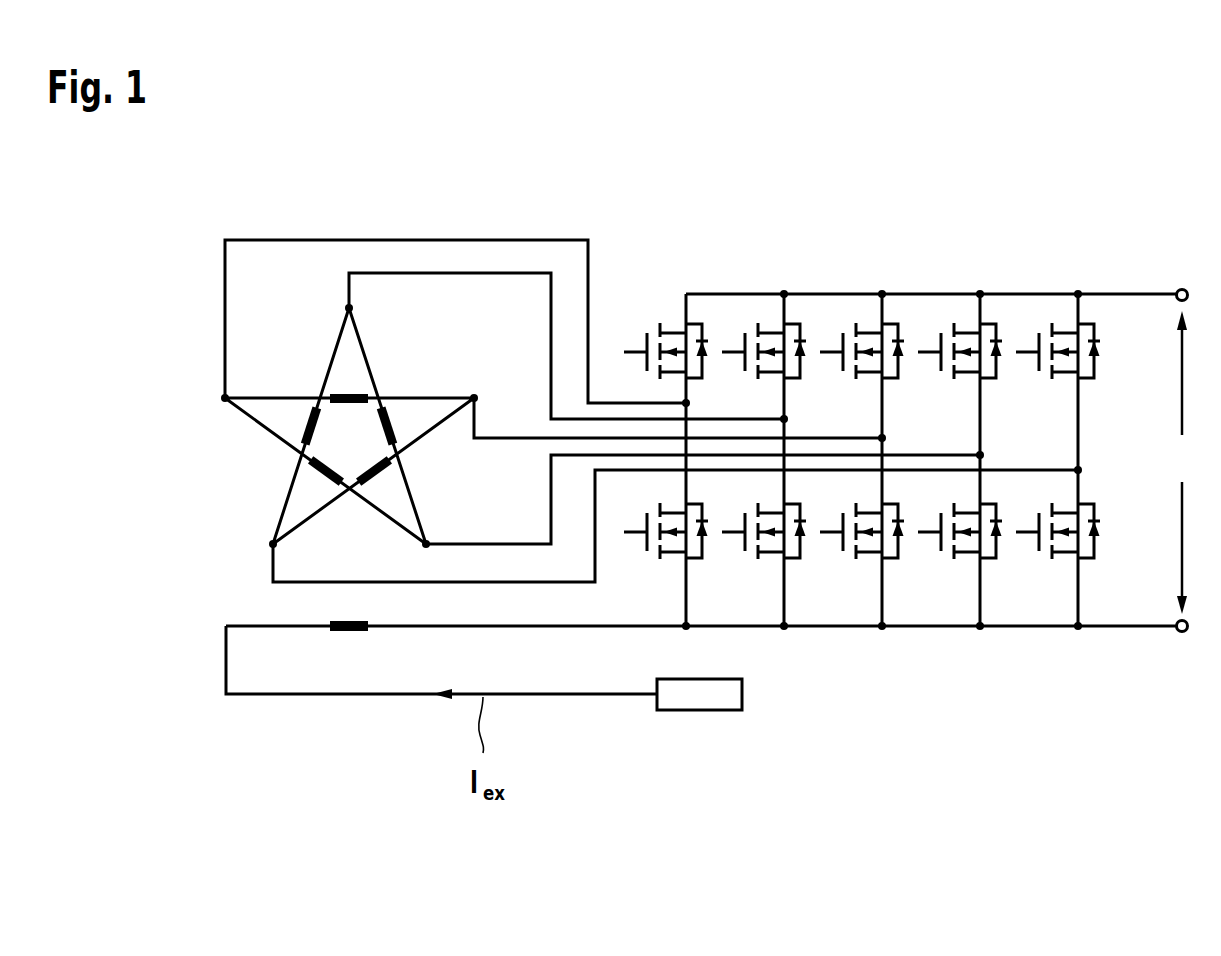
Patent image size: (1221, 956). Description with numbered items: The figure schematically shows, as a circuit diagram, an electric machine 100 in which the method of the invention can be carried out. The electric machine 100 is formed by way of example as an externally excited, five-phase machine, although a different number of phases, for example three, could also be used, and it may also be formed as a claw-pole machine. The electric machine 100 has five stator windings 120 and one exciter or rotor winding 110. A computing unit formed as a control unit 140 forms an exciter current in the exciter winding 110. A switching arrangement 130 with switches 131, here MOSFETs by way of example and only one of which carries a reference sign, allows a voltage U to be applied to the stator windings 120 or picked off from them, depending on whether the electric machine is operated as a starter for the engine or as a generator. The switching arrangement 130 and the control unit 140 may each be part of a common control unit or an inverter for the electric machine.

The electric machine 100 is at (577, 411).
The exciter winding 110 is at (348, 632).
The stator windings 120 is at (305, 420).
The switching arrangement 130 is at (907, 385).
The switches 131 is at (1037, 366).
The control unit 140 is at (700, 698).